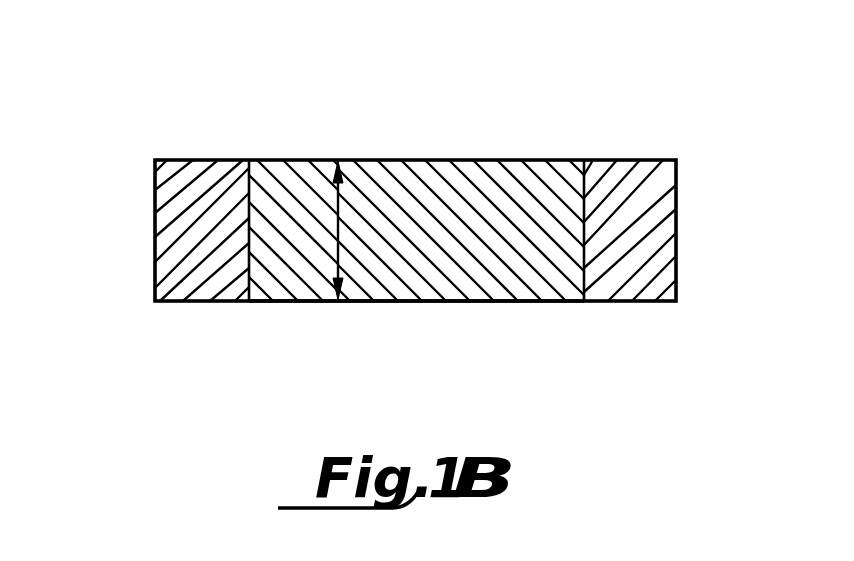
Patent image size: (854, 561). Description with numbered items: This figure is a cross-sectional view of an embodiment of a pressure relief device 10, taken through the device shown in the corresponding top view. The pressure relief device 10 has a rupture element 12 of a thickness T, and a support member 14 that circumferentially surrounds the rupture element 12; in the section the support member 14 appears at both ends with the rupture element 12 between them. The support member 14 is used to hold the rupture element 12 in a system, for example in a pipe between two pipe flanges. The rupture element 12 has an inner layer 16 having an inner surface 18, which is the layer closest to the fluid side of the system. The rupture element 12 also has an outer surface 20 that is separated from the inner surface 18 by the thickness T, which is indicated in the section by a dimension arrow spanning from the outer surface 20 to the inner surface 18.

The pressure relief device 10 is at (745, 287).
The rupture element 12 is at (476, 192).
The support member 14 is at (187, 230).
The inner layer 16 is at (487, 253).
The inner surface 18 is at (290, 305).
The outer surface 20 is at (277, 158).
The thickness T is at (340, 218).